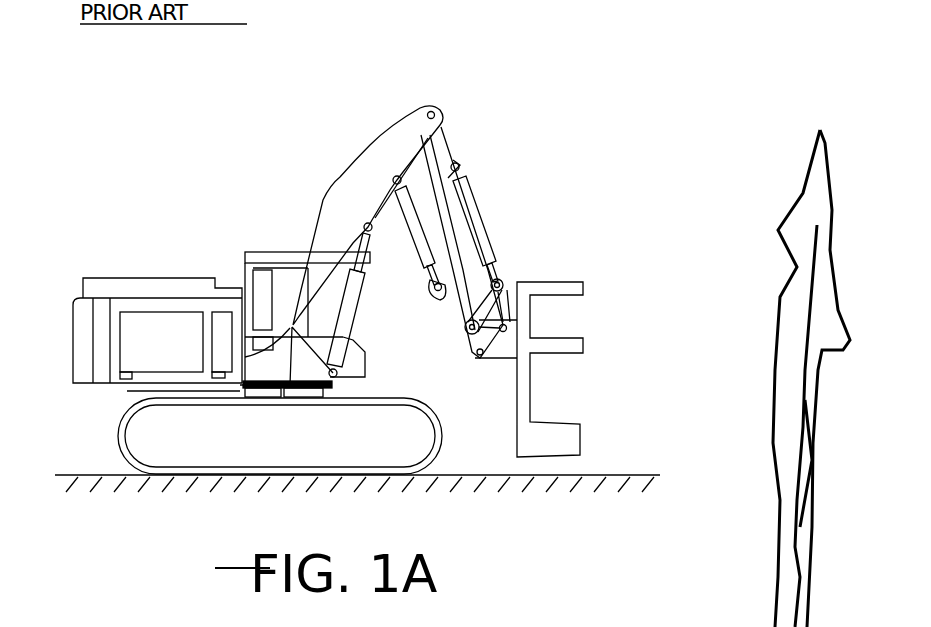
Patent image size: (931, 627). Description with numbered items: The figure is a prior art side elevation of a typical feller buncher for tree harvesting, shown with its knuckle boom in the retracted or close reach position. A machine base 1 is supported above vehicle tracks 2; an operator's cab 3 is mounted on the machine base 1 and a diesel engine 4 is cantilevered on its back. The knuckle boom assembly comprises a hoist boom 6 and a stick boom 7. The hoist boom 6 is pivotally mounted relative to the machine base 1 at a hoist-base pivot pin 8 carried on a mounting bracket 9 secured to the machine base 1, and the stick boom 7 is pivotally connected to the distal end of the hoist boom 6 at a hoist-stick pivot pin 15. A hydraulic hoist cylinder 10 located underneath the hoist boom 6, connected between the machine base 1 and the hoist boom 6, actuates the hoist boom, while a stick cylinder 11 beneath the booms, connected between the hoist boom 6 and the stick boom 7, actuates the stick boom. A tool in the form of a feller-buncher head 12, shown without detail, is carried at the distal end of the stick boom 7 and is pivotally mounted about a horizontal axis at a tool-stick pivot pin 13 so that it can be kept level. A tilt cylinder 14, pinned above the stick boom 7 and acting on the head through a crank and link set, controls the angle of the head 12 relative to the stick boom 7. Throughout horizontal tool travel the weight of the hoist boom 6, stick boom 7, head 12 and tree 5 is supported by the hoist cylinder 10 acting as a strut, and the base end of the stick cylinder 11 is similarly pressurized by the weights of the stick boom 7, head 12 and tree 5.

The machine base 1 is at (122, 385).
The vehicle tracks 2 is at (118, 437).
The operator's cab 3 is at (295, 280).
The diesel engine 4 is at (142, 320).
The tree 5 is at (777, 330).
The hoist boom 6 is at (350, 177).
The stick boom 7 is at (440, 193).
The hoist-base pivot pin 8 is at (287, 388).
The mounting bracket 9 is at (330, 380).
The hydraulic hoist cylinder 10 is at (353, 315).
The stick cylinder 11 is at (413, 233).
The feller-buncher head 12 is at (560, 410).
The tool-stick pivot pin 13 is at (477, 358).
The tilt cylinder 14 is at (480, 223).
The hoist-stick pivot pin 15 is at (437, 112).